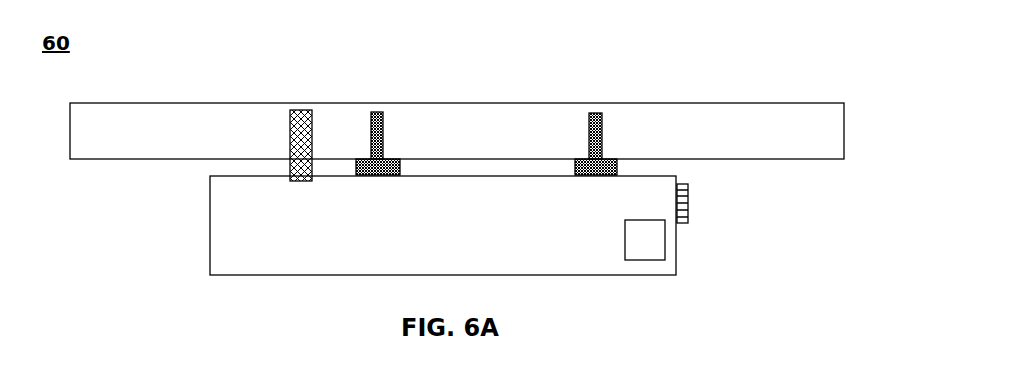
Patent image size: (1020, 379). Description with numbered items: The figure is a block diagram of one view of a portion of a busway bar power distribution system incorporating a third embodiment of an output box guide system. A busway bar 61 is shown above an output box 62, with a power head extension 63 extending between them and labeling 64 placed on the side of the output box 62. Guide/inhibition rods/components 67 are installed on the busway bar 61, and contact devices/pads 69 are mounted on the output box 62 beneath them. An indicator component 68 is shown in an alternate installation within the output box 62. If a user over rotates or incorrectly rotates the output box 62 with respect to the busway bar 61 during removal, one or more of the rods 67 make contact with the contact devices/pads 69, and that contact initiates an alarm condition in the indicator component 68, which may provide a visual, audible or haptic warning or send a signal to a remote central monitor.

The busway bar 61 is at (740, 140).
The output box 62 is at (198, 231).
The power head extension 63 is at (290, 131).
The labeling 64 is at (690, 203).
The guide/inhibition rods/components 67 is at (589, 125).
The indicator component 68 is at (647, 239).
The contact devices/pads 69 is at (370, 176).